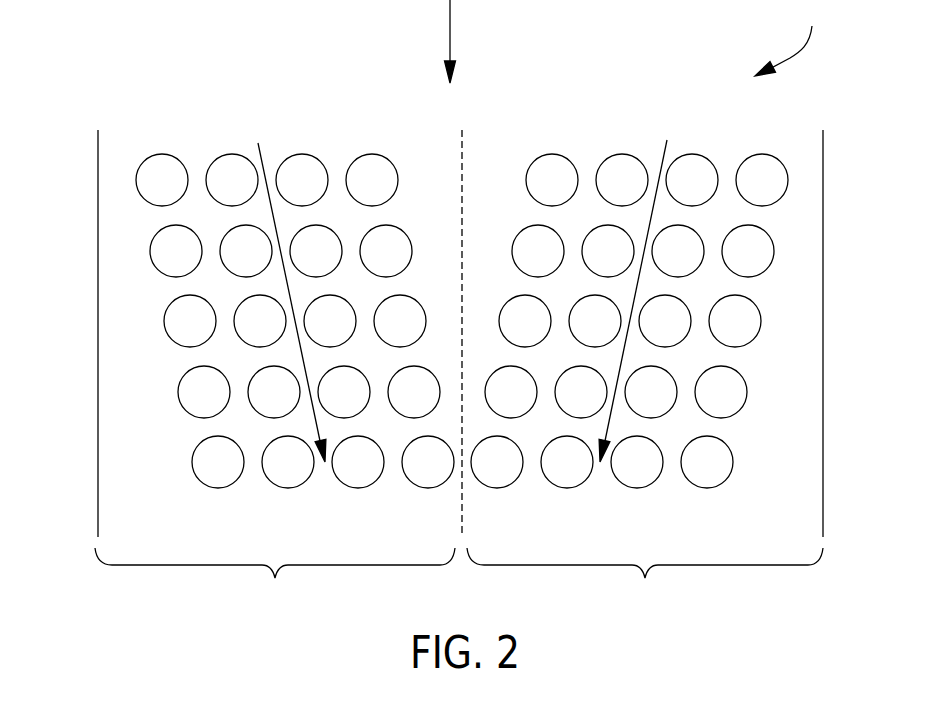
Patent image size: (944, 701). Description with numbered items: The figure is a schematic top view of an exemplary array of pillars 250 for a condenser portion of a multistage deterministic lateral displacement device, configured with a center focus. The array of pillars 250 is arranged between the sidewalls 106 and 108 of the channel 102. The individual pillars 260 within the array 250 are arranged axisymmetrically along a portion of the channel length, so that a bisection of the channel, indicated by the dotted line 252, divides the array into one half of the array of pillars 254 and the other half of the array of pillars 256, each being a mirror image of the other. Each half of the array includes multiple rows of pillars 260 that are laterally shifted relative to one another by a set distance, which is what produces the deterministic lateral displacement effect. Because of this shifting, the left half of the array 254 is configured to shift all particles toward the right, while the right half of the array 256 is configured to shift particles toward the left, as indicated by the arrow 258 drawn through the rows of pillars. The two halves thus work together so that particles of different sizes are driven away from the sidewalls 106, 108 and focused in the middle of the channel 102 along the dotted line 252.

The channel 102 is at (452, 30).
The sidewall 106 is at (98, 292).
The sidewall 108 is at (823, 266).
The array of pillars 250 is at (791, 38).
The dotted line 252 is at (466, 151).
The half of the array of pillars 254 is at (275, 585).
The other half of the array of pillars 256 is at (645, 585).
The arrow 258 is at (278, 229).
The pillars 260 is at (298, 152).